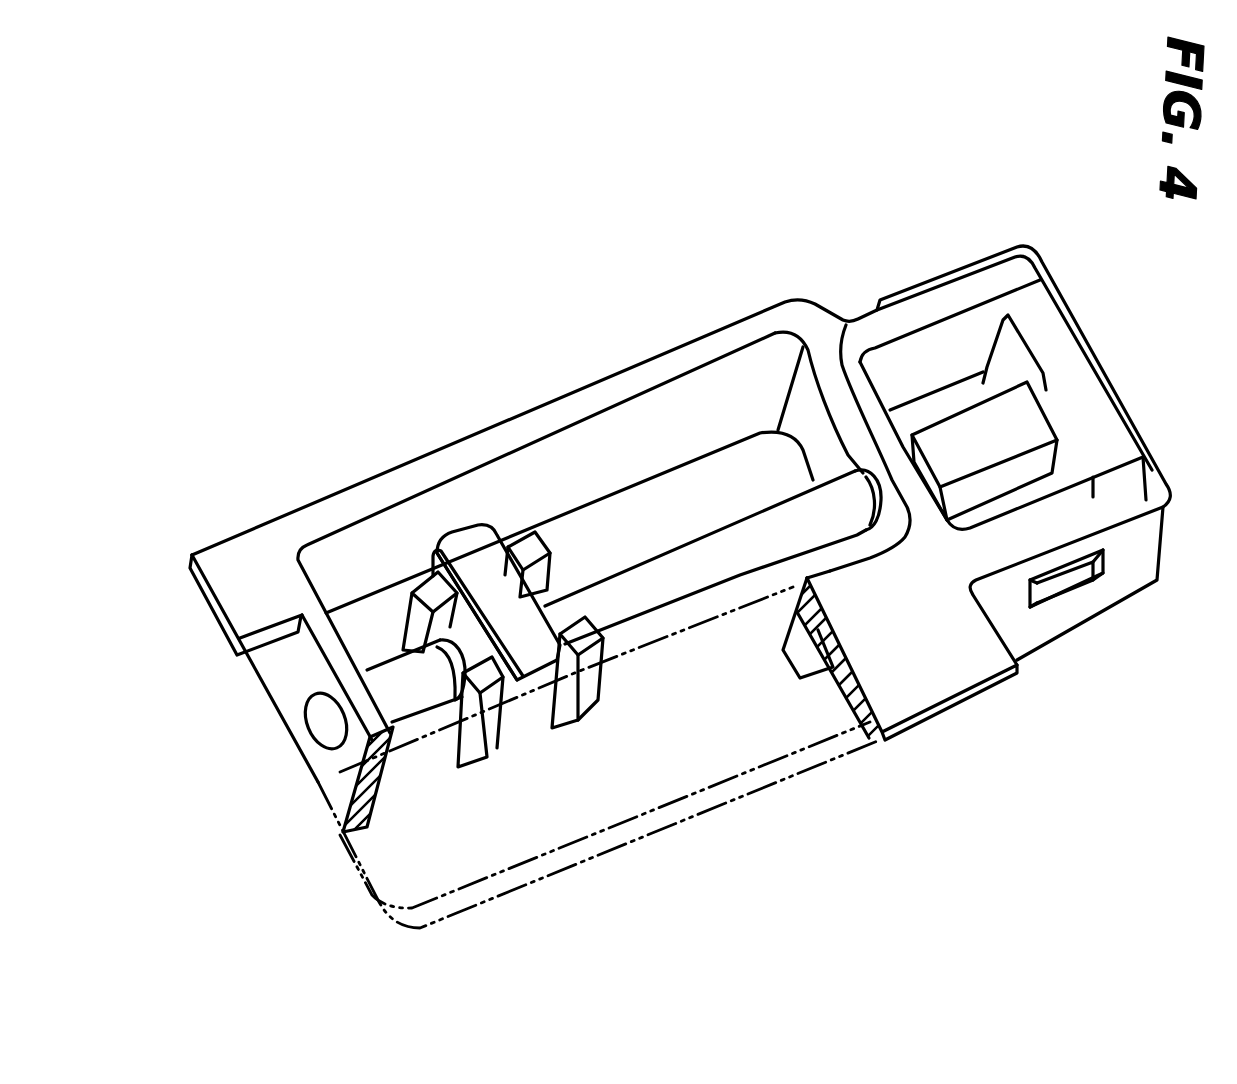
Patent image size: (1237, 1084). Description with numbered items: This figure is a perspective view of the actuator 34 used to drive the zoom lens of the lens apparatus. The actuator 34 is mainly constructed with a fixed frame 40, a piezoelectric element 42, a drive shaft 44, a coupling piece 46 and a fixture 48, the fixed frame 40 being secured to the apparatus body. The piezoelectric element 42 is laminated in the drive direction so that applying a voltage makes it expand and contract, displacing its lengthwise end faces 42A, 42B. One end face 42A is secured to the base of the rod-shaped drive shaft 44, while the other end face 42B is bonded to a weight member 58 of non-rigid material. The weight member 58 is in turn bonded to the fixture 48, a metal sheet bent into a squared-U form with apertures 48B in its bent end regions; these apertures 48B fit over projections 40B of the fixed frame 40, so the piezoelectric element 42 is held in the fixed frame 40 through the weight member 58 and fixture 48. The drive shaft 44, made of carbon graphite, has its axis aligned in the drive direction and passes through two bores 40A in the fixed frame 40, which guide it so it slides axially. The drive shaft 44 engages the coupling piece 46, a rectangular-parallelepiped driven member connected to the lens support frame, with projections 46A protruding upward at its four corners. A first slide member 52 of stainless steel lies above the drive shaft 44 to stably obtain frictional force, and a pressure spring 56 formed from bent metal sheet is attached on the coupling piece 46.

The actuator 34 is at (627, 263).
The fixed frame 40 is at (757, 375).
The bores 40A is at (343, 705).
The projections 40B is at (1075, 575).
The piezoelectric element 42 is at (978, 438).
The end face 42A is at (878, 428).
The end face 42B is at (1030, 398).
The drive shaft 44 is at (697, 562).
The coupling piece 46 is at (400, 612).
The projections 46A is at (422, 572).
The fixture 48 is at (1058, 298).
The apertures 48B is at (1050, 595).
The first slide member 52 is at (532, 610).
The pressure spring 56 is at (470, 550).
The weight member 58 is at (1087, 403).